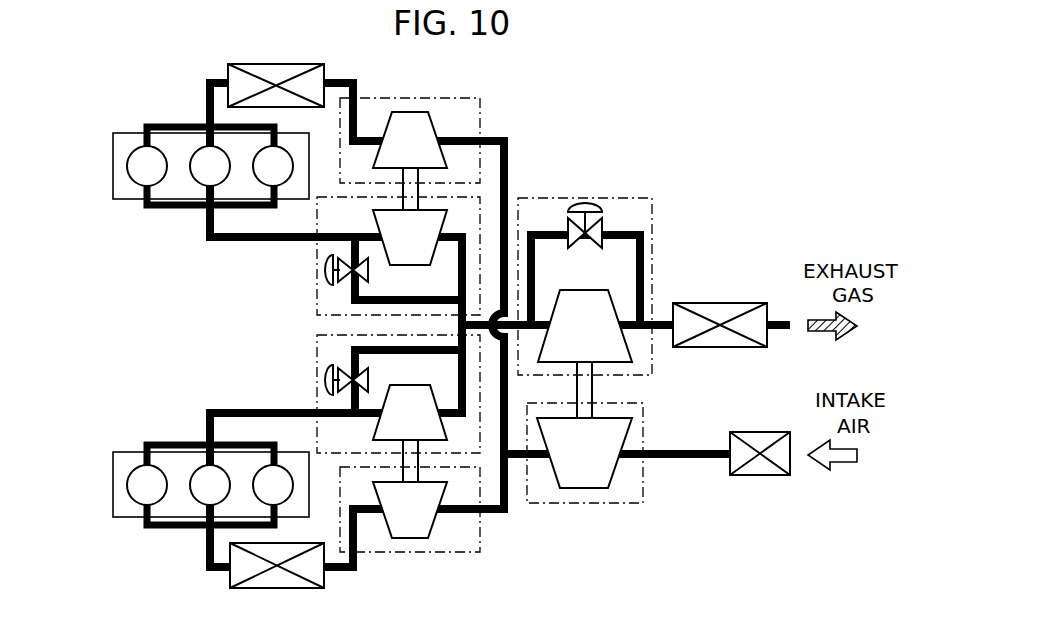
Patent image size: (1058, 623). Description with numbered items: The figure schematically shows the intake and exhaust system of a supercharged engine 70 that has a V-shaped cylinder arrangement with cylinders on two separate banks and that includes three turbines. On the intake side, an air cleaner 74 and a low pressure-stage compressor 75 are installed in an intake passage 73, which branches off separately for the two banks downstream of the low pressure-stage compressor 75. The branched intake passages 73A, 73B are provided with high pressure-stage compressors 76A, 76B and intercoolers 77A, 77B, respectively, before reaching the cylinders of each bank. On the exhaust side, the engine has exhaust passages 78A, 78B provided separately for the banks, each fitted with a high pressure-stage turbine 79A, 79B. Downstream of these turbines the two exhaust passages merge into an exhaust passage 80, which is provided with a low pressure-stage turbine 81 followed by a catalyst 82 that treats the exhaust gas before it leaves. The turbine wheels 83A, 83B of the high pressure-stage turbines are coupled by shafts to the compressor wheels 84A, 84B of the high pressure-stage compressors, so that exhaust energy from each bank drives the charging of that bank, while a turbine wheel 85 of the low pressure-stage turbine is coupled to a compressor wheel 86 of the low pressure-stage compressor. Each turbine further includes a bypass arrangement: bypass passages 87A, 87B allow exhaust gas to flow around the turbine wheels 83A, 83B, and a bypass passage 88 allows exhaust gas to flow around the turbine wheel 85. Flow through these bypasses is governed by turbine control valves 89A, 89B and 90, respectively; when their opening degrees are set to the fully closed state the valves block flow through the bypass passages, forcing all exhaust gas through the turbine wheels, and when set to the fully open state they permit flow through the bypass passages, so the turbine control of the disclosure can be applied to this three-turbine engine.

The supercharged engine 70 is at (79, 118).
The intake passage 73 is at (682, 460).
The intake passage 73A is at (508, 153).
The intake passage 73B is at (508, 508).
The air cleaner 74 is at (757, 476).
The low pressure-stage compressor 75 is at (628, 503).
The high pressure-stage compressor 76A is at (480, 114).
The high pressure-stage compressor 76B is at (480, 538).
The intercooler 77A is at (327, 74).
The intercooler 77B is at (327, 577).
The exhaust passage 78A is at (250, 238).
The exhaust passage 78B is at (250, 412).
The high pressure-stage turbine 79A is at (317, 300).
The high pressure-stage turbine 79B is at (317, 350).
The exhaust passage 80 is at (779, 330).
The low pressure-stage turbine 81 is at (652, 210).
The catalyst 82 is at (732, 303).
The turbine wheel 83A is at (373, 225).
The turbine wheel 83B is at (373, 425).
The compressor wheel 84A is at (417, 112).
The compressor wheel 84B is at (417, 538).
The turbine wheel 85 is at (632, 348).
The compressor wheel 86 is at (632, 436).
The bypass passage 87A is at (380, 298).
The bypass passage 87B is at (380, 352).
The bypass passage 88 is at (642, 263).
The turbine control valve 89A is at (327, 270).
The turbine control valve 89B is at (327, 380).
The turbine control valve 90 is at (590, 205).